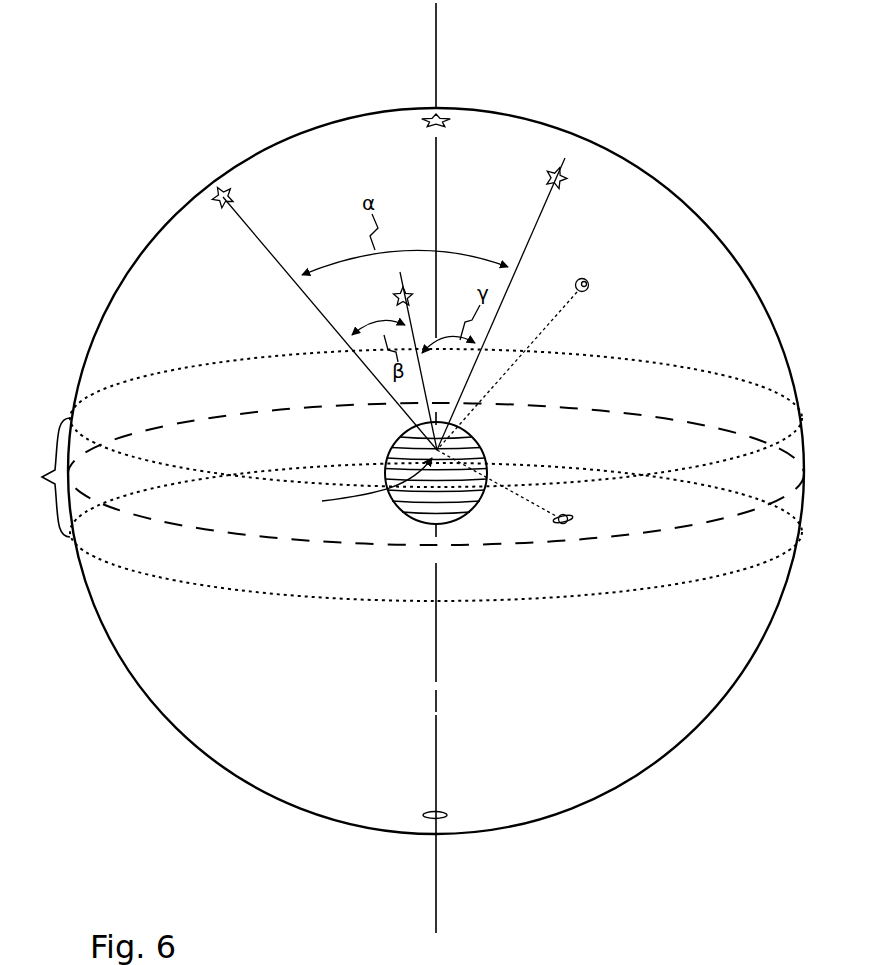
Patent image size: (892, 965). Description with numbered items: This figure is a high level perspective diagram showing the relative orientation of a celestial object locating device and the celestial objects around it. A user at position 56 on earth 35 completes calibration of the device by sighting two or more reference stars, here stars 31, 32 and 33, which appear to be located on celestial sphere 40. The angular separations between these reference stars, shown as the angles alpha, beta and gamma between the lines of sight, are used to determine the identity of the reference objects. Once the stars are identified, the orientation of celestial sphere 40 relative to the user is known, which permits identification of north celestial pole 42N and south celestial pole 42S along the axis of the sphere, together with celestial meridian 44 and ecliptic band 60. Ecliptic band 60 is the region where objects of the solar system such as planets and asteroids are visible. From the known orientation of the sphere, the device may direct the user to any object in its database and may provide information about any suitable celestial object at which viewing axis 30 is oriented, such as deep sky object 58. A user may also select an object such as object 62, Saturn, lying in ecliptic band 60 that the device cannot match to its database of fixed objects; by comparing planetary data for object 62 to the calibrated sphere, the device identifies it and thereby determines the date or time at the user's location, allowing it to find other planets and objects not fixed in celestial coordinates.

The viewing axis 30 is at (512, 371).
The star 31 is at (538, 304).
The star 32 is at (384, 361).
The star 33 is at (306, 316).
The earth 35 is at (469, 473).
The celestial sphere 40 is at (436, 471).
The north celestial pole 42N is at (473, 468).
The south celestial pole 42S is at (471, 852).
The celestial meridian 44 is at (436, 483).
The position 56 is at (364, 486).
The deep sky object 58 is at (610, 317).
The ecliptic band 60 is at (406, 475).
The object 62 is at (538, 487).